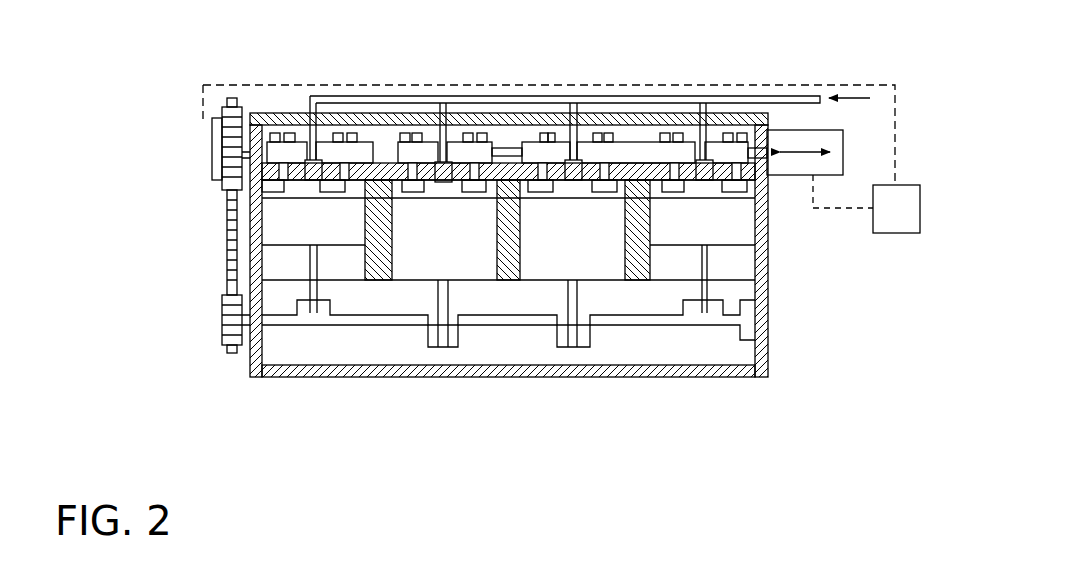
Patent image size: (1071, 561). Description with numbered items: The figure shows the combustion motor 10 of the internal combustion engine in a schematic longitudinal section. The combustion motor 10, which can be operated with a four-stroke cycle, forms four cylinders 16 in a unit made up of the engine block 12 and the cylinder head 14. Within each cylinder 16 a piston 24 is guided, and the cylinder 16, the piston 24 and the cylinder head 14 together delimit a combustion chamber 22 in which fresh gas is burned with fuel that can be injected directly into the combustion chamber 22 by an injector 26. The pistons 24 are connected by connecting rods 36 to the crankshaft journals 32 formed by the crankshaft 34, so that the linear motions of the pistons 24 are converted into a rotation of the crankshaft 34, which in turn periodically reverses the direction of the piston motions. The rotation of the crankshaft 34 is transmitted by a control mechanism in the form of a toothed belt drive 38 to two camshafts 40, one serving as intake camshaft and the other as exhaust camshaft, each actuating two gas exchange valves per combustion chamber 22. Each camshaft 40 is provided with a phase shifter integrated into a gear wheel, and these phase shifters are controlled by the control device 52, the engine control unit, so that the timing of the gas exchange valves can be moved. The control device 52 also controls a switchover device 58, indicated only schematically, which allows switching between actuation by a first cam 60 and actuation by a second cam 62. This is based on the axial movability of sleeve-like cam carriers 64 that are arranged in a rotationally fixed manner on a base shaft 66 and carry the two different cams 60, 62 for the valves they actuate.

The combustion motor 10 is at (195, 81).
The engine block 12 is at (256, 367).
The cylinder head 14 is at (272, 111).
The cylinders 16 is at (280, 267).
The combustion chambers 22 is at (353, 184).
The pistons 24 is at (348, 232).
The injectors 26 is at (311, 170).
The crankshaft journals 32 is at (300, 338).
The crankshaft 34 is at (610, 320).
The connecting rods 36 is at (313, 317).
The toothed belt drive 38 is at (216, 250).
The camshafts 40 is at (520, 140).
The control device 52 is at (903, 214).
The switchover device 58 is at (836, 140).
The first cam 60 is at (352, 134).
The second cam 62 is at (338, 134).
The cam carriers 64 is at (443, 125).
The base shaft 66 is at (503, 152).